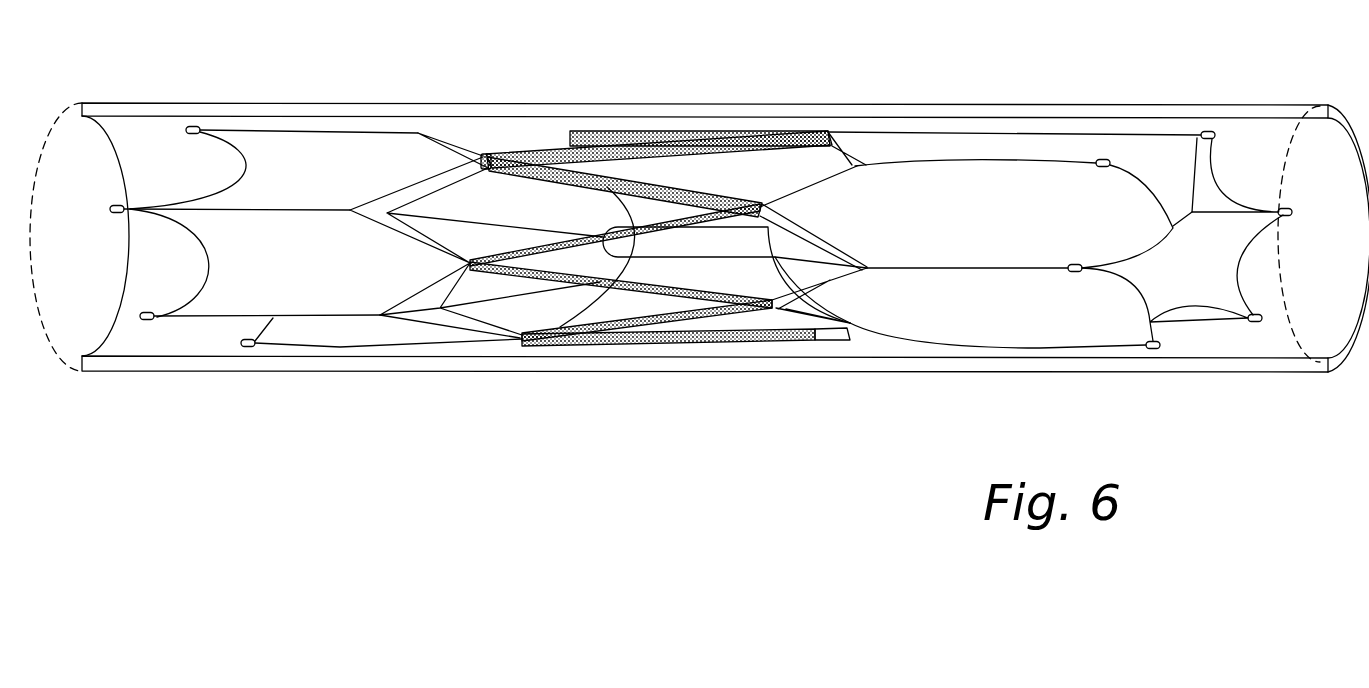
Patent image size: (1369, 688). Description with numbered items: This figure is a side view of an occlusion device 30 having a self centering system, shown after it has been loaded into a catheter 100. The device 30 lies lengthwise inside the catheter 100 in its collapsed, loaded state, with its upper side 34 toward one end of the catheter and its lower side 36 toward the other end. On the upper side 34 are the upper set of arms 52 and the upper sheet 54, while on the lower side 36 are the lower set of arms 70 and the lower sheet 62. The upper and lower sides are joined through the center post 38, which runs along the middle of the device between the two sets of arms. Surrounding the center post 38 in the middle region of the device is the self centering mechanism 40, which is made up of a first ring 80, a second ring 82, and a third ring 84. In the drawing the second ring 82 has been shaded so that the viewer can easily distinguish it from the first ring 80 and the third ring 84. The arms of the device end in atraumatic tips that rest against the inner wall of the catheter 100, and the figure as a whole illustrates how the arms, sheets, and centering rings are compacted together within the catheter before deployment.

The device 30 is at (580, 74).
The upper side 34 is at (316, 278).
The lower side 36 is at (1060, 280).
The center post 38 is at (724, 251).
The self centering mechanism 40 is at (608, 280).
The upper set of arms 52 is at (268, 306).
The upper sheet 54 is at (342, 171).
The lower sheet 62 is at (1064, 224).
The lower set of arms 70 is at (925, 262).
The first ring 80 is at (473, 322).
The second ring 82 is at (656, 340).
The third ring 84 is at (850, 323).
The catheter 100 is at (1204, 112).